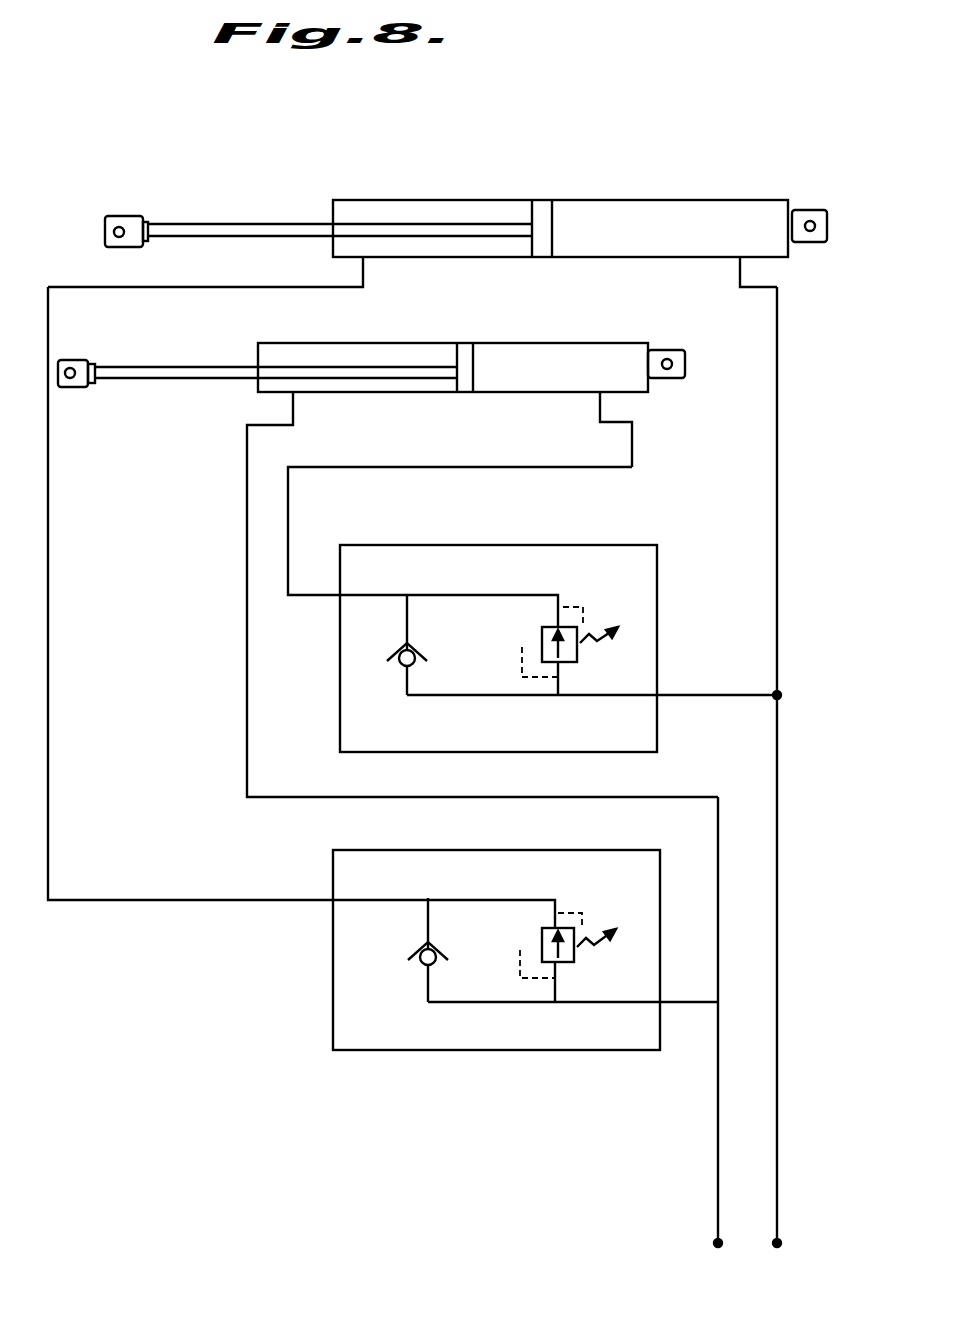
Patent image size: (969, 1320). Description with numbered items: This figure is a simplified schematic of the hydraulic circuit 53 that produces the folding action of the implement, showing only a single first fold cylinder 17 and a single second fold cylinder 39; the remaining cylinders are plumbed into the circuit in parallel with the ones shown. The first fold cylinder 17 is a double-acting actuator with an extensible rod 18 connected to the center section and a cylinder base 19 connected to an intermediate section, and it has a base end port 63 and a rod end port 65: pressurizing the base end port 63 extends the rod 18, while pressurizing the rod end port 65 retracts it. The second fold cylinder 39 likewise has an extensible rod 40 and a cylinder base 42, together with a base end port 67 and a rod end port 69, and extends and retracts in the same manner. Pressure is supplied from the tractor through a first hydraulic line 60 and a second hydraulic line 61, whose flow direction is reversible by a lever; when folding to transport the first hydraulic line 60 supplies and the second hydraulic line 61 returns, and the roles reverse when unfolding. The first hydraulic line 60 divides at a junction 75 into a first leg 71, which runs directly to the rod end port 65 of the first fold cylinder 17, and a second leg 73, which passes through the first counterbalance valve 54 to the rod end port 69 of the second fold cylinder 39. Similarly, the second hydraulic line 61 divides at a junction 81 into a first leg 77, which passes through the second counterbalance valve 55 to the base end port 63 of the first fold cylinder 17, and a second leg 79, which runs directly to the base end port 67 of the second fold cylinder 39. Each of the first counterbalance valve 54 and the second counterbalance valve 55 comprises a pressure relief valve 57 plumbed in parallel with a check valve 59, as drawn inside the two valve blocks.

The hydraulic circuit 53 is at (797, 143).
The second fold cylinder 39 is at (577, 198).
The extensible rod 40 is at (218, 225).
The cylinder base 42 is at (828, 217).
The first fold cylinder 17 is at (512, 343).
The extensible rod 18 is at (147, 366).
The cylinder base 19 is at (688, 362).
The rod end port 69 is at (363, 274).
The base end port 67 is at (740, 277).
The rod end port 65 is at (293, 400).
The base end port 63 is at (600, 395).
The first leg 77 is at (380, 470).
The second leg 79 is at (778, 593).
The junction 81 is at (783, 692).
The second leg 73 is at (48, 596).
The first leg 71 is at (717, 847).
The junction 75 is at (720, 993).
The second counterbalance valve 55 is at (532, 545).
The first counterbalance valve 54 is at (527, 848).
The pressure relief valve 57 is at (577, 658).
The check valve 59 is at (408, 617).
The first hydraulic line 60 is at (718, 1185).
The second hydraulic line 61 is at (783, 1165).